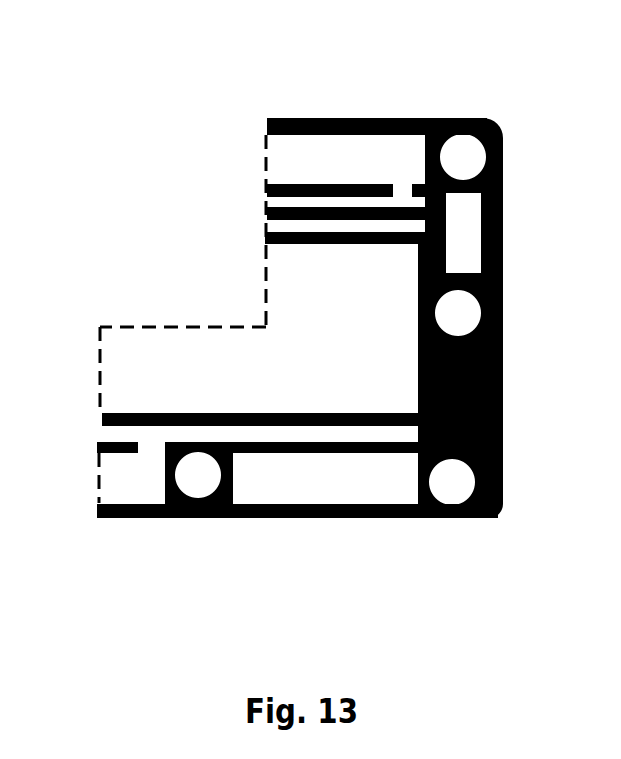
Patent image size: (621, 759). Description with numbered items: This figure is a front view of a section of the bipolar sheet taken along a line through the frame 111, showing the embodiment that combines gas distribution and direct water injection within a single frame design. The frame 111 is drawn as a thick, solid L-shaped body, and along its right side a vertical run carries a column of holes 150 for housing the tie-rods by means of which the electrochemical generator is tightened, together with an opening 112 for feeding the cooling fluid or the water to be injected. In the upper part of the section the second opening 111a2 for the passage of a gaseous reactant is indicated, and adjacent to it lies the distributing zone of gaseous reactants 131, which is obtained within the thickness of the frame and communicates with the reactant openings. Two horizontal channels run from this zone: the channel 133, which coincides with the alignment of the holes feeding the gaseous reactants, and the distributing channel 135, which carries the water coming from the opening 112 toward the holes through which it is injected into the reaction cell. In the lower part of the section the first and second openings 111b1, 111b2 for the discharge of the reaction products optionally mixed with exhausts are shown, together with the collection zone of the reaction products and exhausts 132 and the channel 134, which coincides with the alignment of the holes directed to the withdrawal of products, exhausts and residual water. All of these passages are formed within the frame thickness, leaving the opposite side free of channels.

The frame 111 is at (505, 167).
The second opening 111a2 is at (320, 148).
The first opening 111b1 is at (133, 490).
The second opening 111b2 is at (372, 487).
The openings 112 is at (463, 248).
The distributing zone of gaseous reactants 131 is at (400, 188).
The collection zone of the reaction products and exhausts 132 is at (148, 447).
The channel 133 is at (273, 184).
The channel 134 is at (277, 430).
The distributing channel 135 is at (283, 225).
The holes 150 is at (448, 490).